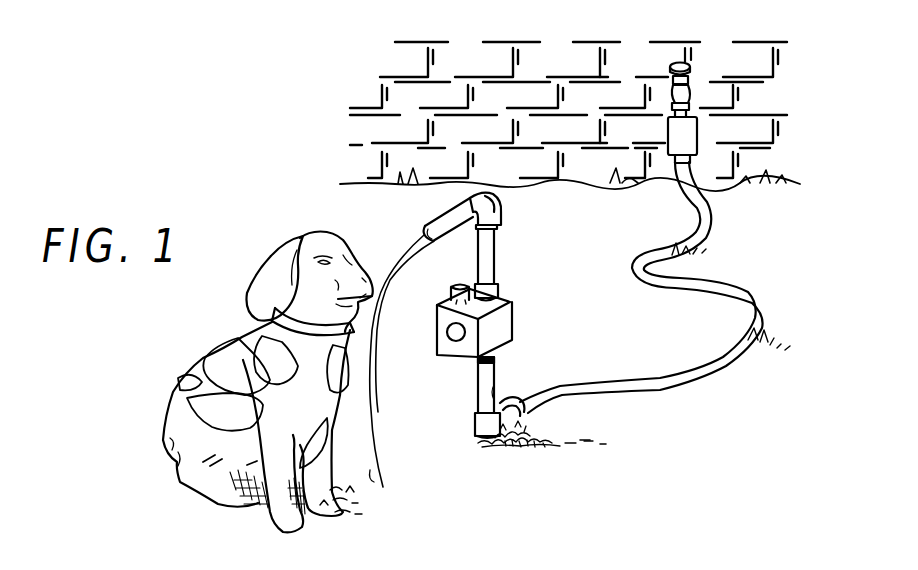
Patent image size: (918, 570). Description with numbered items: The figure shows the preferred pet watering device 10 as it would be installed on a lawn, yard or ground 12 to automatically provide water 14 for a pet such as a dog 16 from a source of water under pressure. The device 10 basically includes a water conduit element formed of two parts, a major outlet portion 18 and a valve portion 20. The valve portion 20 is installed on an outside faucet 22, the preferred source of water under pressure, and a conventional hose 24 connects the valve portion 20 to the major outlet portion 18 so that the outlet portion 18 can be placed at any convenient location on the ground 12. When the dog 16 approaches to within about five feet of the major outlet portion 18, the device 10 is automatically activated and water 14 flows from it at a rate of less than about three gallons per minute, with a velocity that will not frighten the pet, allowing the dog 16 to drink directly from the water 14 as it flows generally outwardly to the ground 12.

The pet watering device 10 is at (295, 205).
The ground 12 is at (649, 452).
The water 14 is at (420, 236).
The dog 16 is at (226, 350).
The major outlet portion 18 is at (508, 285).
The valve portion 20 is at (688, 137).
The outside faucet 22 is at (676, 97).
The hose 24 is at (728, 289).